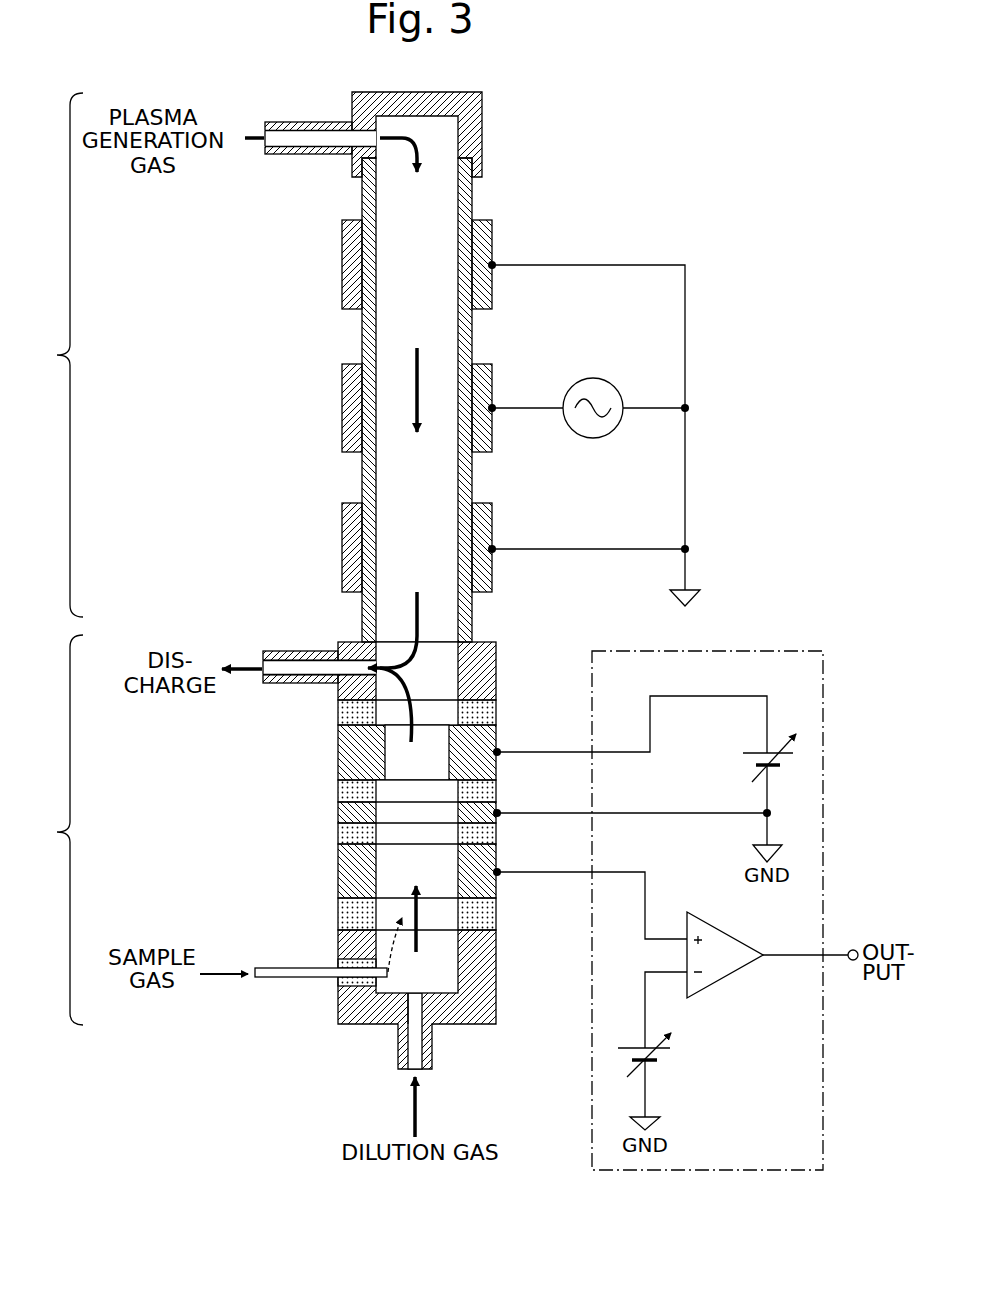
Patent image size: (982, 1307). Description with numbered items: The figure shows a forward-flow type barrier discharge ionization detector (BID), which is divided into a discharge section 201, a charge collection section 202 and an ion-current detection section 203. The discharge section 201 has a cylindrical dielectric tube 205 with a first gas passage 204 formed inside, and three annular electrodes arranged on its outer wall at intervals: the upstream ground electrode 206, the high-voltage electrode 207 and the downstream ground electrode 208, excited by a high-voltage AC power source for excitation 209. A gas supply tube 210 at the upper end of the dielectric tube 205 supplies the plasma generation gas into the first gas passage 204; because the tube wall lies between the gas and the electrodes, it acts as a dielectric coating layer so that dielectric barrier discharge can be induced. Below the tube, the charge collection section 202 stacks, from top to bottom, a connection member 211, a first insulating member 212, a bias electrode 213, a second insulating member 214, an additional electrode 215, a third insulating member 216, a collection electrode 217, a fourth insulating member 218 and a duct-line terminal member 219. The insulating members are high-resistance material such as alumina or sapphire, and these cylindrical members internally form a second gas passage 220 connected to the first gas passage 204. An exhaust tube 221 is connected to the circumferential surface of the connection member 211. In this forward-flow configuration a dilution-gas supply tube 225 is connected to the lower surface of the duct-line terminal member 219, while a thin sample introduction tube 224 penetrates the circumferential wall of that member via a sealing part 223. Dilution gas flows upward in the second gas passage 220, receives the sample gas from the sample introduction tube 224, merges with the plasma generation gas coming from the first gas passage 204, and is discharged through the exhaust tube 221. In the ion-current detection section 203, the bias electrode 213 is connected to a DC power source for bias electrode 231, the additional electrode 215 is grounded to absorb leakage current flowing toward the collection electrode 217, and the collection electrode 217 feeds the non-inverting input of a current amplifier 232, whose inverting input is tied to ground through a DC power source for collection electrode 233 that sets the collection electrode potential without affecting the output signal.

The discharge section 201 is at (46, 355).
The charge collection section 202 is at (46, 830).
The ion-current detection section 203 is at (825, 683).
The first gas passage 204 is at (404, 220).
The cylindrical dielectric tube 205 is at (475, 202).
The upstream ground electrode 206 is at (342, 280).
The high-voltage electrode 207 is at (342, 410).
The downstream ground electrode 208 is at (342, 550).
The high-voltage AC power source for excitation 209 is at (614, 378).
The gas supply tube 210 is at (295, 122).
The connection member 211 is at (496, 677).
The first insulating member 212 is at (496, 712).
The bias electrode 213 is at (496, 740).
The second insulating member 214 is at (338, 787).
The additional electrode 215 is at (338, 814).
The third insulating member 216 is at (338, 833).
The collection electrode 217 is at (338, 870).
The fourth insulating member 218 is at (338, 912).
The duct-line terminal member 219 is at (467, 1027).
The second gas passage 220 is at (403, 751).
The exhaust tube 221 is at (286, 650).
The sealing part 223 is at (334, 987).
The sample introduction tube 224 is at (268, 983).
The dilution-gas supply tube 225 is at (397, 1047).
The DC power source for bias electrode 231 is at (747, 752).
The current amplifier 232 is at (743, 968).
The DC power source for collection electrode 233 is at (658, 1065).